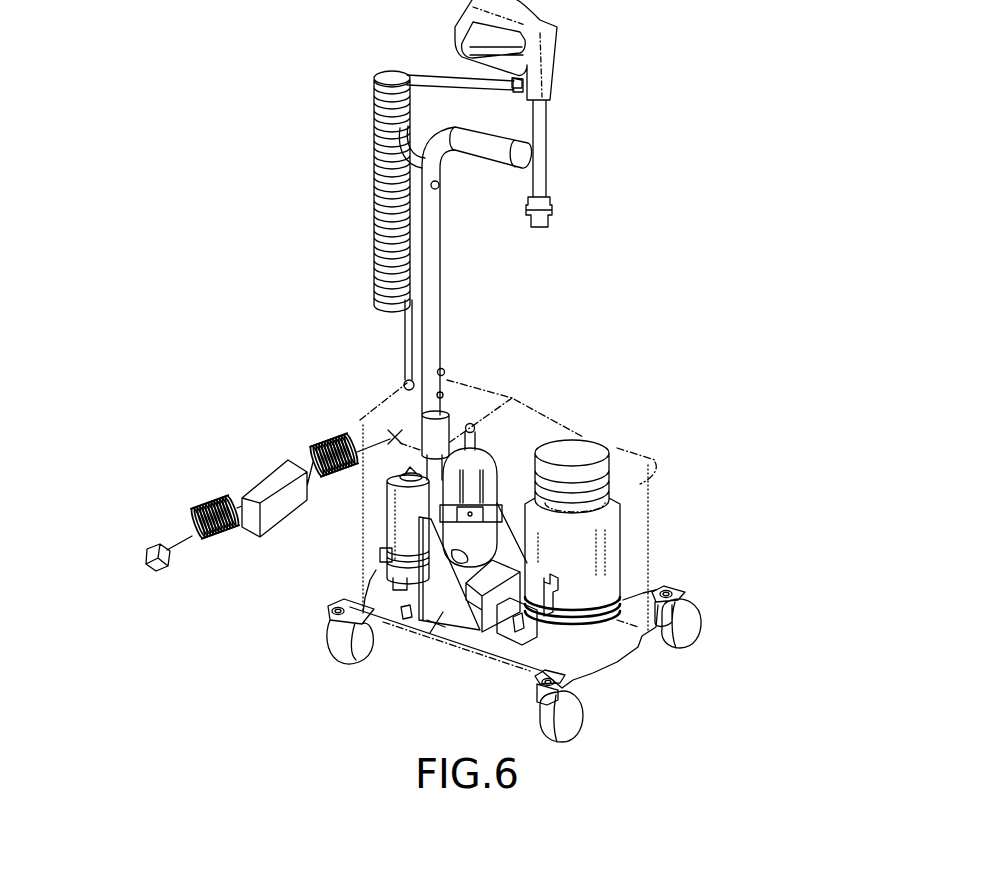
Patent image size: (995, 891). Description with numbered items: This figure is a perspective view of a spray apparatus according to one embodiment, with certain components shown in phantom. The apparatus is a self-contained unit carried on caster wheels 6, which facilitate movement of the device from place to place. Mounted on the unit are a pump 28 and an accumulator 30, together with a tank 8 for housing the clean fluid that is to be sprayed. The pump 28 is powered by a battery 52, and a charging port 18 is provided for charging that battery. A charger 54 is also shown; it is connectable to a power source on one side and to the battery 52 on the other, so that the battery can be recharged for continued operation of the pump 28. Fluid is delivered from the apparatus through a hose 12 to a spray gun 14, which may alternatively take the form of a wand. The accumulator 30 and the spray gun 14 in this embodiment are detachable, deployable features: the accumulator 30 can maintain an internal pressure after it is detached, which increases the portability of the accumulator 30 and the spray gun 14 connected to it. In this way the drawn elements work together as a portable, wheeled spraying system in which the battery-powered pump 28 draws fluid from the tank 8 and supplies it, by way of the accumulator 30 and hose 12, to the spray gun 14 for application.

The caster wheels 6 is at (363, 647).
The tank 8 is at (593, 452).
The hose 12 is at (408, 253).
The spray gun 14 is at (545, 60).
The charging port 18 is at (395, 437).
The pump 28 is at (400, 540).
The accumulator 30 is at (428, 637).
The battery 52 is at (525, 560).
The charger 54 is at (268, 475).